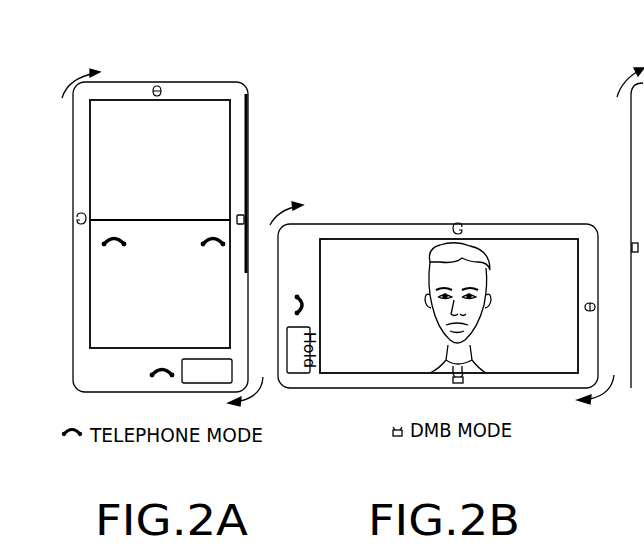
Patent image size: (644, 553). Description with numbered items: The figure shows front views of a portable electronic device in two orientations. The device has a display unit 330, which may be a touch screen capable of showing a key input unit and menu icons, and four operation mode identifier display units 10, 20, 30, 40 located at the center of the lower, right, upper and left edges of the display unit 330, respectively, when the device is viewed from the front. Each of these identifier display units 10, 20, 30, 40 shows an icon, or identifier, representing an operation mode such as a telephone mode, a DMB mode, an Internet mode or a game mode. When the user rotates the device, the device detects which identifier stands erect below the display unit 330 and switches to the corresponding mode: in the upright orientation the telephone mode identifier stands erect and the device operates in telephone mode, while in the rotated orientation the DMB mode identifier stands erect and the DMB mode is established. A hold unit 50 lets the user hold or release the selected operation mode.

The operation mode identifier display unit 10 is at (147, 373).
The operation mode identifier display unit 20 is at (243, 215).
The operation mode identifier display unit 30 is at (157, 79).
The operation mode identifier display unit 40 is at (76, 220).
The hold unit 50 is at (233, 372).
The display unit 330 is at (201, 100).